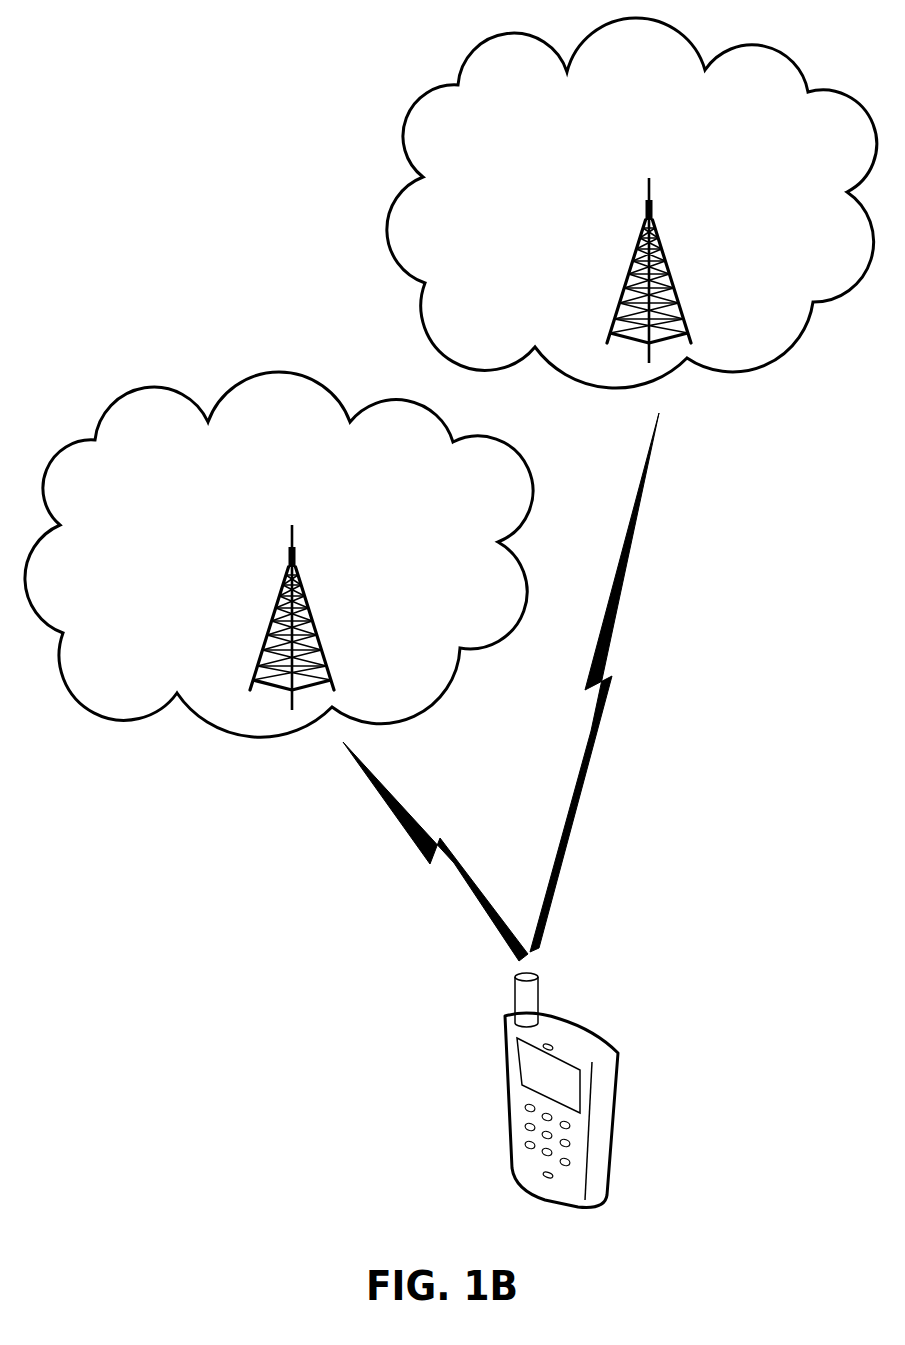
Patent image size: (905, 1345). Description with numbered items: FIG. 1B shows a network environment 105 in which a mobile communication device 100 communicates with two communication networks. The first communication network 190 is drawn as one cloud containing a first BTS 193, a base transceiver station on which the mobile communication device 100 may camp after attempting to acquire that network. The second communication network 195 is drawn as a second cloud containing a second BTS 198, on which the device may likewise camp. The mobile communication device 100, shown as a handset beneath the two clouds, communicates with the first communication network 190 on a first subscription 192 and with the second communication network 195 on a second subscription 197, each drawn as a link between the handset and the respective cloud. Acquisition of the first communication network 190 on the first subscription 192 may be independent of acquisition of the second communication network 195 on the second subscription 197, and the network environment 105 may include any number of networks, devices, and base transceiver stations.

The mobile communication device 100 is at (620, 1087).
The network environment 105 is at (103, 111).
The first communication network 190 is at (269, 512).
The first subscription 192 is at (452, 866).
The first BTS 193 is at (311, 617).
The second communication network 195 is at (615, 158).
The second subscription 197 is at (597, 731).
The second BTS 198 is at (627, 284).